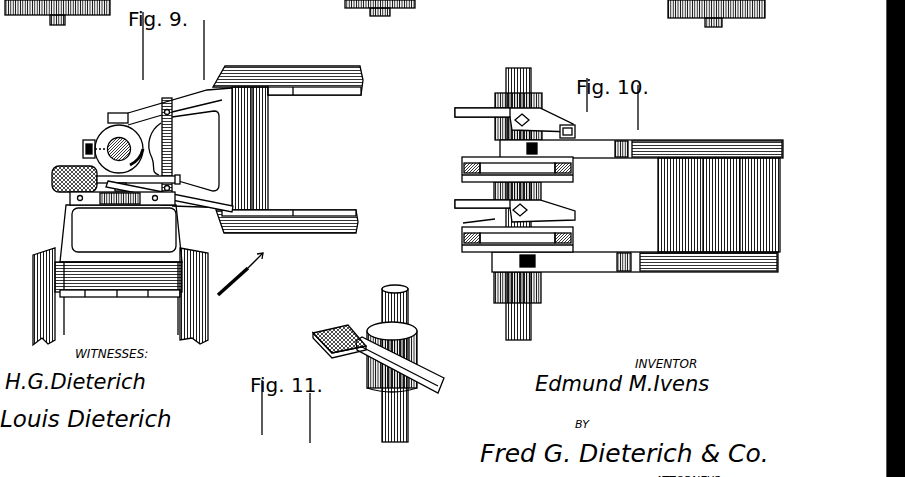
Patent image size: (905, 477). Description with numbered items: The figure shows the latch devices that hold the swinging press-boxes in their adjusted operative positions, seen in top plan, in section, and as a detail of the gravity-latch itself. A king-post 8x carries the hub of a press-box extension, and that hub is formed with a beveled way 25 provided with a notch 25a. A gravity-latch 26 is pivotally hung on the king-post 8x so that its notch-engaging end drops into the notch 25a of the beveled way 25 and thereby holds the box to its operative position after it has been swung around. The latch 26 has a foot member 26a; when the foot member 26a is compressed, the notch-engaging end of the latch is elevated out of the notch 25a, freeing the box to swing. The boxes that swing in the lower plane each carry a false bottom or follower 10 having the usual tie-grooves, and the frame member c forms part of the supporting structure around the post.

In FIG. 9, the king-post 8x is at (115, 143).
In FIG. 10, the king-post 8x is at (506, 77).
In FIG. 11, the king-post 8x is at (387, 298).
In FIG. 9, the foot member 26a is at (70, 158).
In FIG. 10, the foot member 26a is at (465, 203).
In FIG. 11, the foot member 26a is at (338, 330).
In FIG. 9, the gravity-latch 26 is at (177, 178).
In FIG. 10, the gravity-latch 26 is at (577, 123).
In FIG. 11, the gravity-latch 26 is at (423, 377).
In FIG. 9, the beveled way 25 is at (170, 160).
In FIG. 10, the beveled way 25 is at (565, 125).
In FIG. 9, the notch 25a is at (92, 200).
In FIG. 10, the notch 25a is at (458, 224).
In FIG. 9, the false bottom or follower 10 is at (77, 212).
In FIG. 9, the wooden frame member c is at (288, 149).
In FIG. 10, the wooden frame member c is at (637, 206).